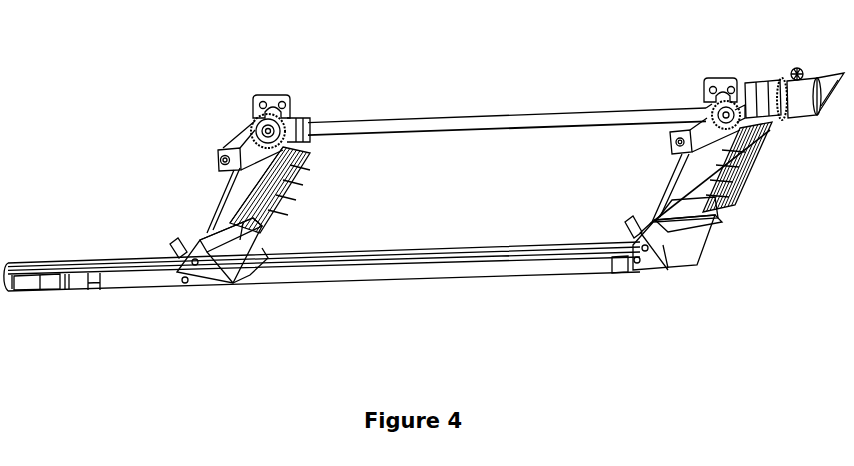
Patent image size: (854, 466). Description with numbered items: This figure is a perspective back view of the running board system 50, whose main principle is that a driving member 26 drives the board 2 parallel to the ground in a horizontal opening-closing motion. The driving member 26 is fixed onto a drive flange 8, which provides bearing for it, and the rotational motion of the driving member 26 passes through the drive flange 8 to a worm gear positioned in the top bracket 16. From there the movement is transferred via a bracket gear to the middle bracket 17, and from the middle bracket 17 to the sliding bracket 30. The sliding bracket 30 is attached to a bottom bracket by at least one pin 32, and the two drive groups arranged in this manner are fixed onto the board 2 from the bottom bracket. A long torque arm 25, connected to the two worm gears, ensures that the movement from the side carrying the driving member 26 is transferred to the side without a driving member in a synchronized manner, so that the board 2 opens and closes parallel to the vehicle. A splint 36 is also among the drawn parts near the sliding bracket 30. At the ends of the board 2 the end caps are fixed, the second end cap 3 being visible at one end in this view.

The running board system 50 is at (133, 71).
The board 2 is at (387, 269).
The second end cap 3 is at (52, 283).
The drive flange 8 is at (763, 94).
The top bracket 16 is at (270, 98).
The middle bracket 17 is at (231, 199).
The torque arm 25 is at (498, 118).
The driving member 26 is at (805, 110).
The sliding bracket 30 is at (245, 234).
The pin 32 is at (668, 268).
The splint 36 is at (175, 246).